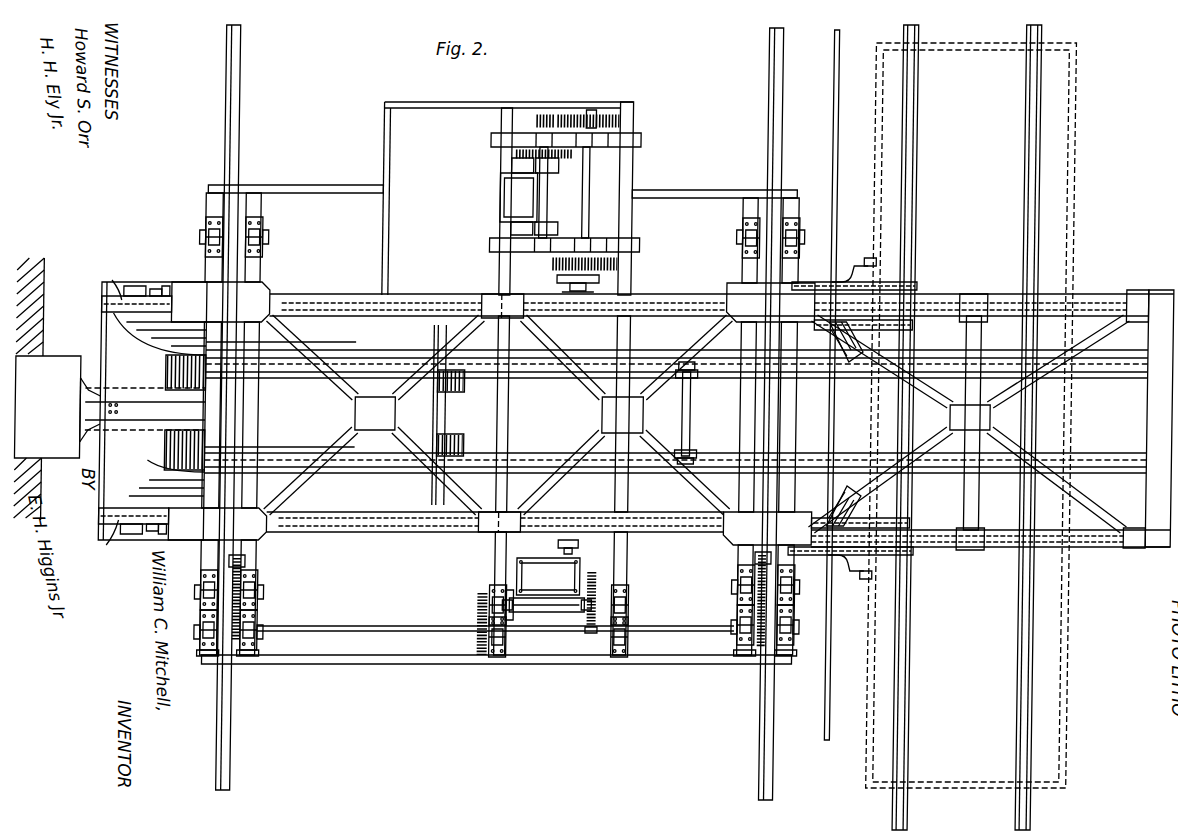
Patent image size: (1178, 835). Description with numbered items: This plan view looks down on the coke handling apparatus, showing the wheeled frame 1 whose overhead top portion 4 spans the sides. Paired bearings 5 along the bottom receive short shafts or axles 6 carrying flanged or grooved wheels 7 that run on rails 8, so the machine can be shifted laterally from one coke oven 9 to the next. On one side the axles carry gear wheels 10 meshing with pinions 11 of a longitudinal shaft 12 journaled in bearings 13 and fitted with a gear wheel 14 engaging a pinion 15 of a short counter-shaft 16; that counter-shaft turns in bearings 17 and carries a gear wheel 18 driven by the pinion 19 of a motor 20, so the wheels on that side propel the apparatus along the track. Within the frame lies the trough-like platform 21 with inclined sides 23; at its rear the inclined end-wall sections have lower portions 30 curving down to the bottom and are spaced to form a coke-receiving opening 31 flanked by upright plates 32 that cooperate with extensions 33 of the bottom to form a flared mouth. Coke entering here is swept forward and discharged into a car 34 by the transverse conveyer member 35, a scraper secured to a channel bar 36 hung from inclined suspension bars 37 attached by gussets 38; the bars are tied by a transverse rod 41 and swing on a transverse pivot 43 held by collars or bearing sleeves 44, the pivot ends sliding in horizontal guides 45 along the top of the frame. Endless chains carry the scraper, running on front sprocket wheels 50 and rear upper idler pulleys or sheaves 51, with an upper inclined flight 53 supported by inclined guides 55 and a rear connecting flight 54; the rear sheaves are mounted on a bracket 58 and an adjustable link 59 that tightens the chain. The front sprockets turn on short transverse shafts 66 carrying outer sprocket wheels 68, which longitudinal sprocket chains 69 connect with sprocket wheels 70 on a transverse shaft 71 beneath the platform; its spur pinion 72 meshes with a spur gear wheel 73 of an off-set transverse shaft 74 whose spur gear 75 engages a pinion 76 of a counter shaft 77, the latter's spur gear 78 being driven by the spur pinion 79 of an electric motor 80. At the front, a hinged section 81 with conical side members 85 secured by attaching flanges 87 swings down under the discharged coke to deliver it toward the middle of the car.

The wheeled frame 1 is at (428, 289).
The overhead top portion 4 is at (340, 533).
The bearings 5 is at (262, 222).
The shafts or axles 6 is at (267, 237).
The flanged or grooved wheels 7 is at (230, 212).
The rails 8 is at (235, 133).
The coke oven 9 is at (48, 389).
The gear wheels 10 is at (247, 560).
The pinions 11 is at (240, 640).
The longitudinal shaft 12 is at (345, 626).
The bearings 13 is at (203, 635).
The gear wheel 14 is at (478, 645).
The pinion 15 is at (480, 605).
The counter-shaft 16 is at (542, 612).
The bearings 17 is at (496, 592).
The gear wheel 18 is at (590, 630).
The pinion 19 is at (598, 593).
The motor 20 is at (545, 575).
The platform 21 is at (374, 415).
The inclined sides 23 is at (290, 350).
The lower portions 30 is at (150, 478).
The coke-receiving opening 31 is at (185, 412).
The upright plates 32 is at (122, 432).
The extensions 33 is at (80, 395).
The car 34 is at (947, 788).
The conveyer member 35 is at (446, 408).
The channel bar 36 is at (433, 413).
The suspension bars 37 is at (528, 372).
The gussets 38 is at (440, 372).
The transverse rod 41 is at (643, 410).
The transverse pivot 43 is at (690, 411).
The collars or bearing sleeves 44 is at (697, 376).
The horizontal guides 45 is at (728, 364).
The front sprocket wheels 50 is at (898, 338).
The upper idler pulleys or sheaves 51 is at (128, 508).
The upper inclined flight 53 is at (455, 312).
The rear connecting flight 54 is at (100, 305).
The inclined guides 55 is at (330, 350).
The bracket 58 is at (135, 286).
The adjustable link 59 is at (164, 288).
The short transverse shafts 66 is at (874, 265).
The outer sprocket wheels 68 is at (912, 282).
The longitudinal sprocket chains 69 is at (662, 316).
The sprocket wheels 70 is at (560, 316).
The transverse shaft 71 is at (578, 540).
The spur pinion 72 is at (618, 264).
The spur gear wheel 73 is at (556, 278).
The transverse shaft 74 is at (586, 200).
The spur gear 75 is at (600, 115).
The pinion 76 is at (541, 115).
The counter shaft 77 is at (544, 200).
The spur gear 78 is at (556, 166).
The spur pinion 79 is at (514, 156).
The electric motor 80 is at (518, 200).
The hinged section 81 is at (950, 418).
The conical side members 85 is at (842, 355).
The attaching flanges 87 is at (860, 345).